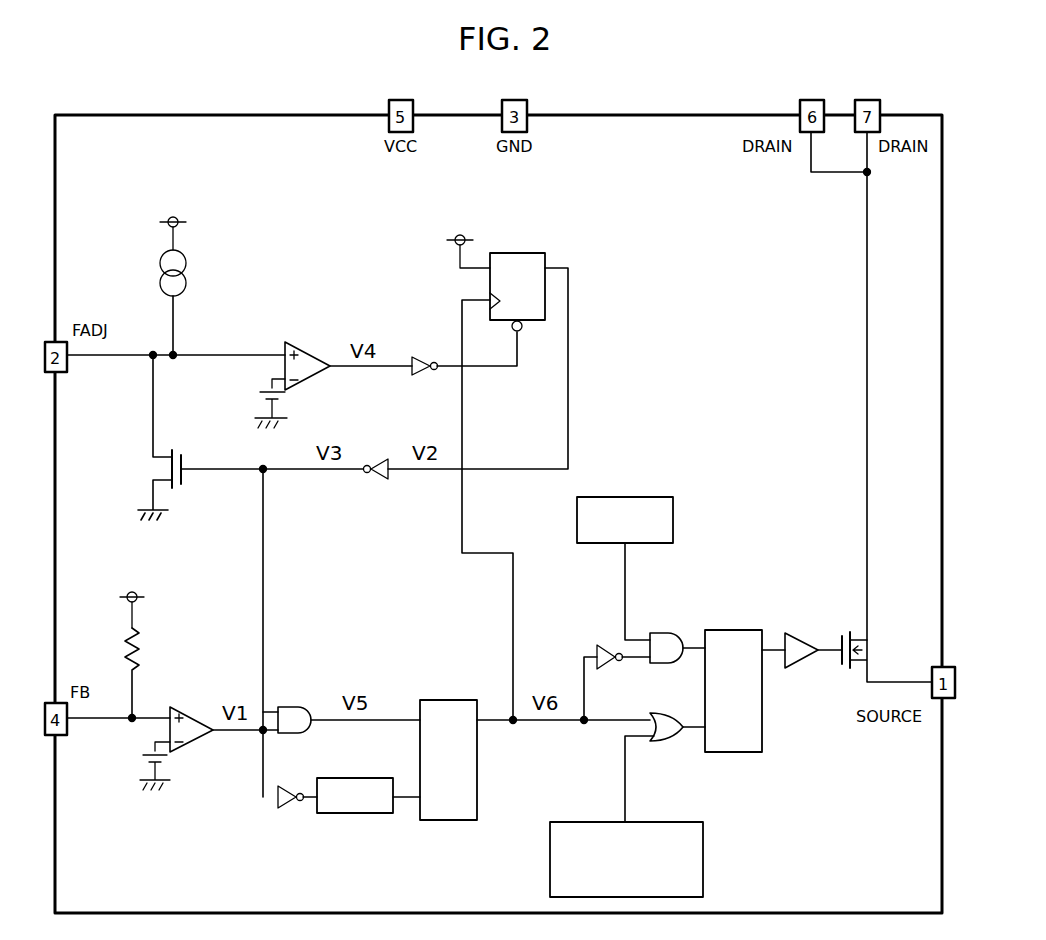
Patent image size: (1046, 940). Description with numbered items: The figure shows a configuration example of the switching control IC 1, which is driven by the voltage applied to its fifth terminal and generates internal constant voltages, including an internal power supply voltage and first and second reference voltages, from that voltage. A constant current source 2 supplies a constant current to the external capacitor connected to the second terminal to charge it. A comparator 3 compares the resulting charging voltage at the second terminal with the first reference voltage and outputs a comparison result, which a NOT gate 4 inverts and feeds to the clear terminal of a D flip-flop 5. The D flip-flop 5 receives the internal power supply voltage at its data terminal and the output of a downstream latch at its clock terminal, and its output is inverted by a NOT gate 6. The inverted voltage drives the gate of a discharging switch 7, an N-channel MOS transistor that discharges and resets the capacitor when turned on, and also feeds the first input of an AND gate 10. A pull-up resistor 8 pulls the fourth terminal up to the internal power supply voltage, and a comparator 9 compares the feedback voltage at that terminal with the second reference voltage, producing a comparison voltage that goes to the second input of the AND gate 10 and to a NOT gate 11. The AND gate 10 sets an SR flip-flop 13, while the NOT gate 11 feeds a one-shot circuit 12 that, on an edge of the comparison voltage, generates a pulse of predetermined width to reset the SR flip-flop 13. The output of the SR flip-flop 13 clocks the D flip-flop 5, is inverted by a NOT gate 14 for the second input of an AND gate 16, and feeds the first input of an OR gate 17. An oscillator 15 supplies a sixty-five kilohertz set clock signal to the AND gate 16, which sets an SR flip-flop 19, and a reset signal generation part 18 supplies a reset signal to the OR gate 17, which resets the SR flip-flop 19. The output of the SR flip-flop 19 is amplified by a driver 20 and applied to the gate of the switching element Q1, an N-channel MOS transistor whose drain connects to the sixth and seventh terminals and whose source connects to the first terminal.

The switching control IC 1 is at (637, 113).
The constant current source 2 is at (197, 262).
The comparator 3 is at (305, 352).
The NOT gate 4 is at (418, 354).
The D flip-flop 5 is at (518, 252).
The NOT gate 6 is at (380, 459).
The discharging switch 7 is at (193, 441).
The pull-up resistor 8 is at (148, 652).
The comparator 9 is at (193, 714).
The AND gate 10 is at (290, 704).
The NOT gate 11 is at (288, 789).
The one-shot circuit 12 is at (353, 777).
The SR flip-flop 13 is at (448, 697).
The NOT gate 14 is at (603, 647).
The oscillator 15 is at (622, 495).
The AND gate 16 is at (663, 633).
The OR gate 17 is at (663, 713).
The reset signal generation part 18 is at (708, 860).
The SR flip-flop 19 is at (732, 627).
The driver 20 is at (798, 635).
The switching element Q1 is at (875, 651).